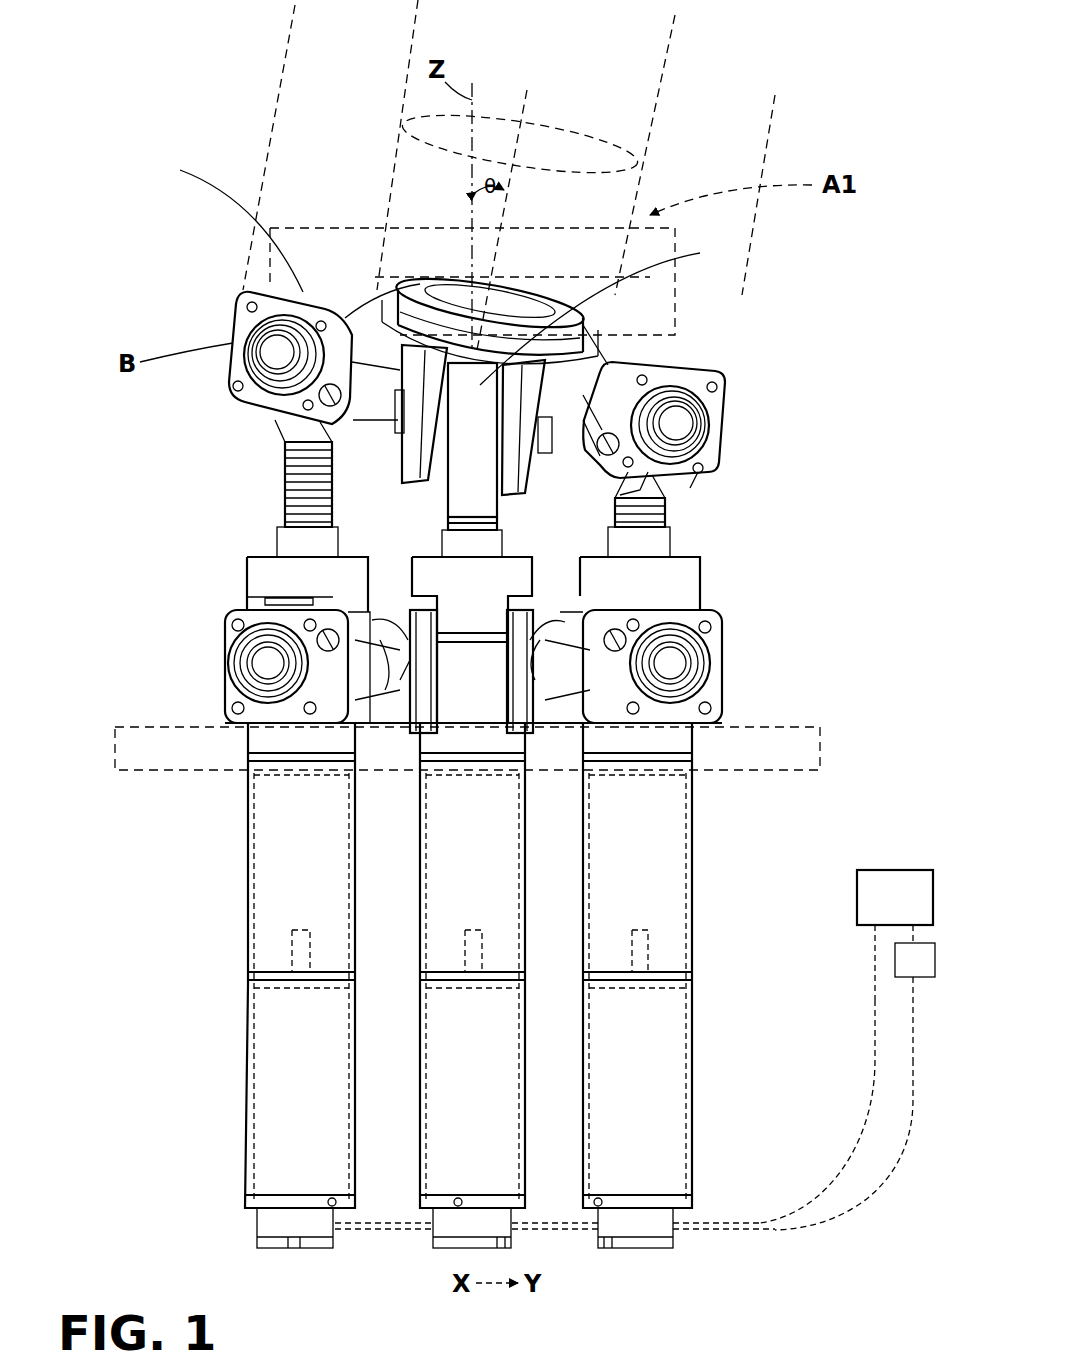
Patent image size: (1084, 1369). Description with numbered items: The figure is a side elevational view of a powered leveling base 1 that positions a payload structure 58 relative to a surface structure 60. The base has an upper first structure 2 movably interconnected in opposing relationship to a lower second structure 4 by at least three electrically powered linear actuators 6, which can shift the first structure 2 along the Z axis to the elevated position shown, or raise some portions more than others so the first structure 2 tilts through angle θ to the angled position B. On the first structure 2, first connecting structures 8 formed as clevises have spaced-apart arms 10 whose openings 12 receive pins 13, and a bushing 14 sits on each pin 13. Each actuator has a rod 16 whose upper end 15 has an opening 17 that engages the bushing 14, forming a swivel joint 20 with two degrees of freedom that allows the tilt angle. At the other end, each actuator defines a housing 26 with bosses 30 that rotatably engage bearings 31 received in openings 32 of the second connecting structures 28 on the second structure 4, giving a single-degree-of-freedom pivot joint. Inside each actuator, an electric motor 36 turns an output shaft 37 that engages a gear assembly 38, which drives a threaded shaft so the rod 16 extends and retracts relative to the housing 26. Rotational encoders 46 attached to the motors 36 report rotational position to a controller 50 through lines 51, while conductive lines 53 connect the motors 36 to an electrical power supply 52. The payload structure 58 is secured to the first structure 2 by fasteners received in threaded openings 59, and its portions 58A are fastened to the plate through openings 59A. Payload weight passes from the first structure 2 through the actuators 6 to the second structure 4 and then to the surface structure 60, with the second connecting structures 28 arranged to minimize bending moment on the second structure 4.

The powered leveling base 1 is at (765, 367).
The first structure 2 is at (729, 432).
The second structure 4 is at (732, 622).
The linear actuator 6 is at (245, 845).
The first connecting structure 8 is at (231, 311).
The arm 10 is at (236, 390).
The opening 12 is at (240, 340).
The pin 13 is at (280, 352).
The bushing 14 is at (440, 445).
The upper end 15 is at (813, 290).
The rod 16 is at (285, 478).
The opening 17 is at (440, 445).
The swivel joint 20 is at (233, 274).
The housing 26 is at (247, 995).
The second connecting structure 28 is at (225, 683).
The boss 30 is at (265, 665).
The bearing 31 is at (257, 630).
The opening 32 is at (235, 650).
The electric motor 36 is at (245, 1075).
The output shaft 37 is at (292, 932).
The gear assembly 38 is at (243, 803).
The rotational encoder 46 is at (258, 1220).
The controller 50 is at (895, 897).
The line 51 is at (873, 998).
The electrical power supply 52 is at (915, 992).
The conductive line 53 is at (913, 1040).
The payload structure 58 is at (385, 165).
The portion 58A is at (285, 45).
The threaded opening 59 is at (585, 312).
The opening 59A is at (243, 295).
The surface structure 60 is at (152, 775).